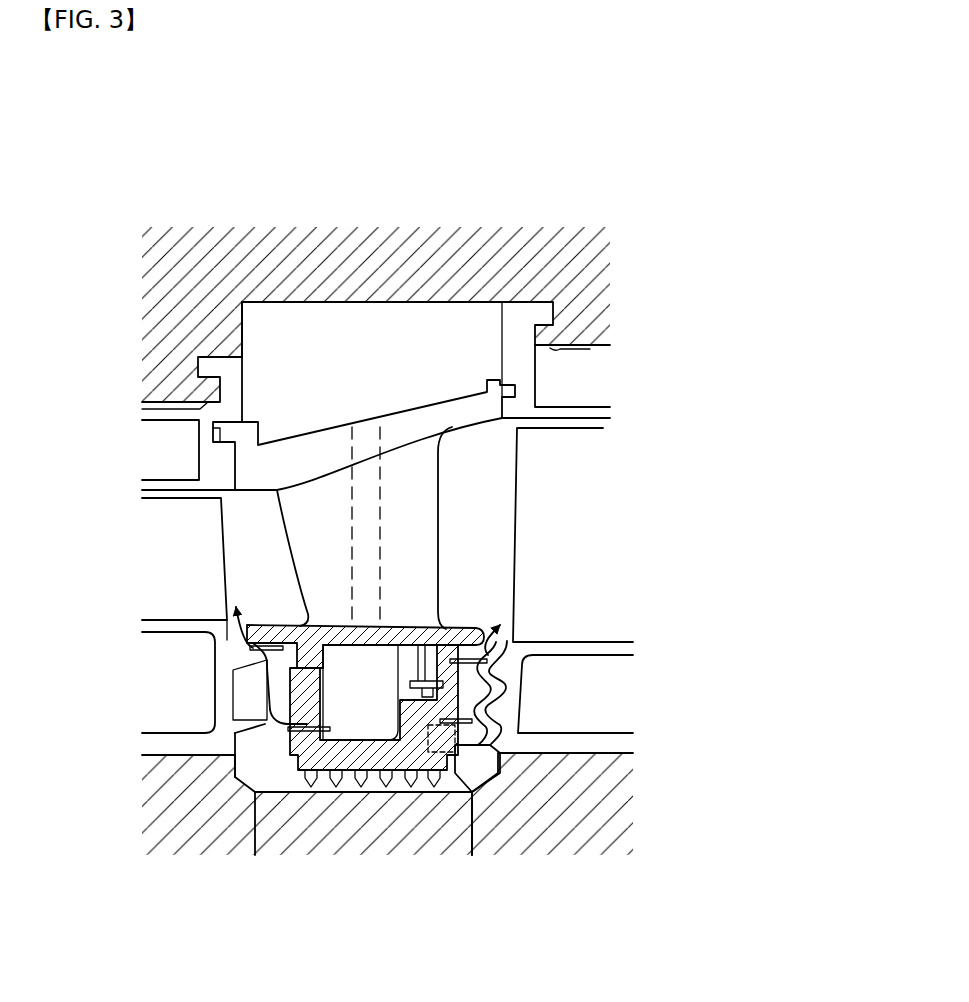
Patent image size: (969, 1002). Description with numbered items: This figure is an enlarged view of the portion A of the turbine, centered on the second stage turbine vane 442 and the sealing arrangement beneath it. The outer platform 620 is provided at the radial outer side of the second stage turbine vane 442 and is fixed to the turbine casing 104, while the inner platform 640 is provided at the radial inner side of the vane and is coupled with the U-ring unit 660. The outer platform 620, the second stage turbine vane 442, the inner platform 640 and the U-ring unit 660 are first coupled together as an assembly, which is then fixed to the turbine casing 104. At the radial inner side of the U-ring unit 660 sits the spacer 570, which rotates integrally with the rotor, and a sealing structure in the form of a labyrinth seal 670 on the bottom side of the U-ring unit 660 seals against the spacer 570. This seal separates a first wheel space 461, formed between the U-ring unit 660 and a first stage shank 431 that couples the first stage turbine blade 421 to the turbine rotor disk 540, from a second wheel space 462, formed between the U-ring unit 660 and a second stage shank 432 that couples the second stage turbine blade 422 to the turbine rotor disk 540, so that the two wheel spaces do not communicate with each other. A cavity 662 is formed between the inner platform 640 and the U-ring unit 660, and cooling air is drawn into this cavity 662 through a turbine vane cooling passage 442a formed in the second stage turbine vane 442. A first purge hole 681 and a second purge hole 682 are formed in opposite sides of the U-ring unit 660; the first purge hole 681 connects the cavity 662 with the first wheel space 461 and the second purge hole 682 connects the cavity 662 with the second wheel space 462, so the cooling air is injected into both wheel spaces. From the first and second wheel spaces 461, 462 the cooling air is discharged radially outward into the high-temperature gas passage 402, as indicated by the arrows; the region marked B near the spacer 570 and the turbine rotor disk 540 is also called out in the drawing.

The turbine casing 104 is at (545, 250).
The high-temperature gas passage 402 is at (255, 523).
The first stage turbine blade 421 is at (163, 555).
The second stage turbine blade 422 is at (548, 547).
The first stage shank 431 is at (220, 680).
The second stage shank 432 is at (512, 715).
The second stage turbine vane 442 is at (410, 470).
The turbine vane cooling passage 442a is at (385, 525).
The first wheel space 461 is at (262, 740).
The second wheel space 462 is at (460, 757).
The turbine rotor disk 540 is at (168, 823).
The spacer 570 is at (440, 837).
The outer platform 620 is at (313, 445).
The inner platform 640 is at (442, 612).
The U-ring unit 660 is at (283, 757).
The cavity 662 is at (343, 697).
The labyrinth seal 670 is at (402, 780).
The first purge hole 681 is at (257, 822).
The second purge hole 682 is at (477, 825).
The portion A is at (597, 131).
The region B is at (473, 792).